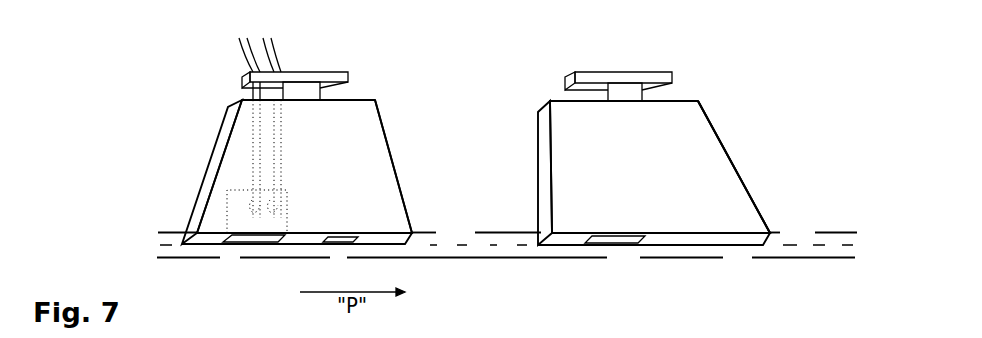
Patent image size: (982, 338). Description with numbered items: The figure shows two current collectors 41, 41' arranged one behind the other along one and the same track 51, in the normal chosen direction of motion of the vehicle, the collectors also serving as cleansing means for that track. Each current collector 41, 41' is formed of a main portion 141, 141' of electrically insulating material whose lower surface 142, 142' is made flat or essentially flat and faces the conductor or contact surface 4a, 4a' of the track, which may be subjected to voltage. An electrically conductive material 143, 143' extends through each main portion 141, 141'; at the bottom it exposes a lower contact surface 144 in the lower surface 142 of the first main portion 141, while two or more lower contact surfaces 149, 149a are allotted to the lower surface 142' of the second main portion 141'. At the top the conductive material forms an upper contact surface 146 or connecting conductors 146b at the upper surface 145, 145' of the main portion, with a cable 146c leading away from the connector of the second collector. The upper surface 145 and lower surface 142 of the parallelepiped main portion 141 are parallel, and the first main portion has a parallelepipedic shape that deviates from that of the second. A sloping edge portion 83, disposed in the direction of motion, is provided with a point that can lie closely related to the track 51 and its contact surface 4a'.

The track 51 is at (137, 240).
The contact surface 4a is at (506, 215).
The contact surface 4a' is at (634, 232).
The main portion 141' is at (297, 172).
The upper surface 145' is at (334, 69).
The connecting conductors 146b is at (272, 93).
The wires / cable 146c is at (247, 54).
The upper contact surface 146 is at (243, 98).
The current collector 41' is at (401, 166).
The electrically conductive material 143' is at (204, 185).
The lower surface 142' is at (325, 266).
The lower contact surface 149 is at (238, 245).
The lower contact surface 149a is at (338, 243).
The main portion 141 is at (654, 173).
The upper surface 145 is at (662, 79).
The current collector 41 is at (731, 165).
The sloping edge portion 83 is at (730, 150).
The electrically conductive material 143 is at (764, 192).
The lower contact surface 144 is at (615, 238).
The lower surface 142 is at (669, 266).